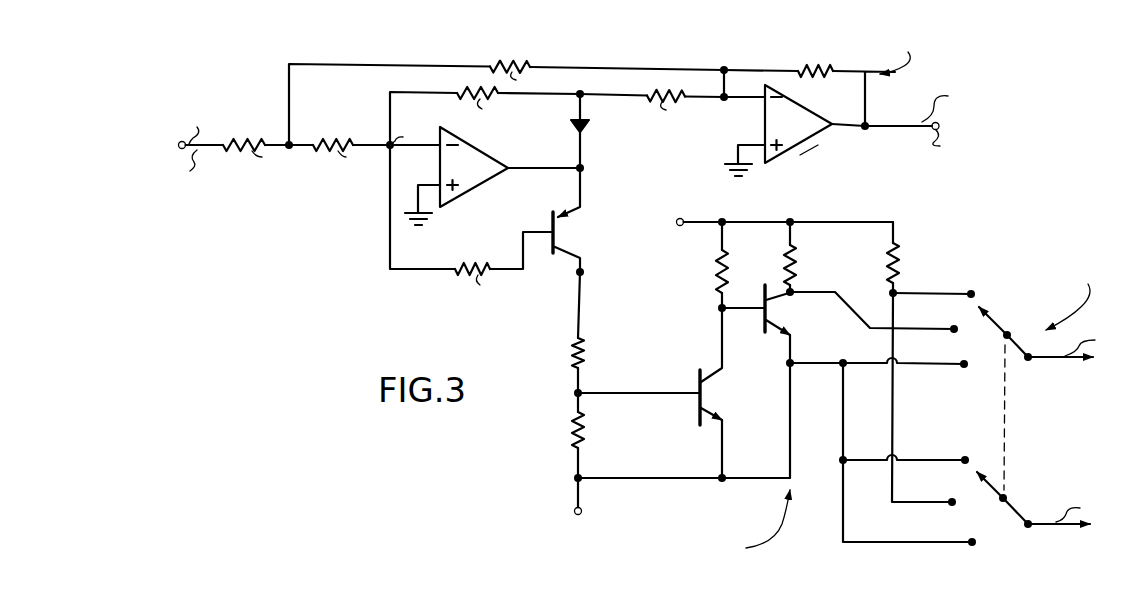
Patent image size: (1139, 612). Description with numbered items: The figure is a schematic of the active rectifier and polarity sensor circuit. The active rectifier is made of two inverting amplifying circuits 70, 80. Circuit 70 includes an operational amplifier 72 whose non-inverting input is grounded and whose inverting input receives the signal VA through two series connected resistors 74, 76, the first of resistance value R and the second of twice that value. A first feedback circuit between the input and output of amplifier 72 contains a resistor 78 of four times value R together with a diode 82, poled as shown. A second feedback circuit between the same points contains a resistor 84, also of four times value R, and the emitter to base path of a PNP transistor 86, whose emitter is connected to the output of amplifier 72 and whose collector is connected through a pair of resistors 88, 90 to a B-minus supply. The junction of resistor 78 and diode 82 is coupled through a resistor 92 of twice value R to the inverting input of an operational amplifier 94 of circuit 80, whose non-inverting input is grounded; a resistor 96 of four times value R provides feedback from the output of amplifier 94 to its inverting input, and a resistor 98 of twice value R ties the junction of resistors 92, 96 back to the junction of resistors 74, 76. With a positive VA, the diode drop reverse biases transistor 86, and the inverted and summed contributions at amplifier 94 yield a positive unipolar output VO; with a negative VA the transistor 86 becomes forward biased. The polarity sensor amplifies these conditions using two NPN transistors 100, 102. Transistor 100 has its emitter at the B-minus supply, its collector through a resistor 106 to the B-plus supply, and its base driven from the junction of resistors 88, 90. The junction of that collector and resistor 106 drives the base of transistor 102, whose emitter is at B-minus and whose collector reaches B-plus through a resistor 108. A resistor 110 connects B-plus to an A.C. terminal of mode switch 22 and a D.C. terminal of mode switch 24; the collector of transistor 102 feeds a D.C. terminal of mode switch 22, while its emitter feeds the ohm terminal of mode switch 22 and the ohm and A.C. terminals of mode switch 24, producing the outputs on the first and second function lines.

The mode switch 22 is at (1010, 332).
The mode switch 24 is at (1006, 498).
The inverting amplifying circuit 70 is at (334, 232).
The operational amplifier 72 is at (502, 165).
The resistor 74 is at (246, 142).
The resistor 76 is at (336, 142).
The resistor 78 is at (472, 92).
The inverting amplifying circuit 80 is at (812, 151).
The diode 82 is at (588, 124).
The resistor 84 is at (472, 267).
The PNP transistor 86 is at (562, 238).
The resistor 88 is at (584, 356).
The resistor 90 is at (583, 443).
The resistor 92 is at (652, 98).
The operational amplifier 94 is at (800, 138).
The resistor 96 is at (830, 46).
The resistor 98 is at (512, 66).
The NPN transistor 100 is at (710, 393).
The NPN transistor 102 is at (772, 312).
The resistor 106 is at (718, 270).
The resistor 108 is at (784, 276).
The resistor 110 is at (892, 272).